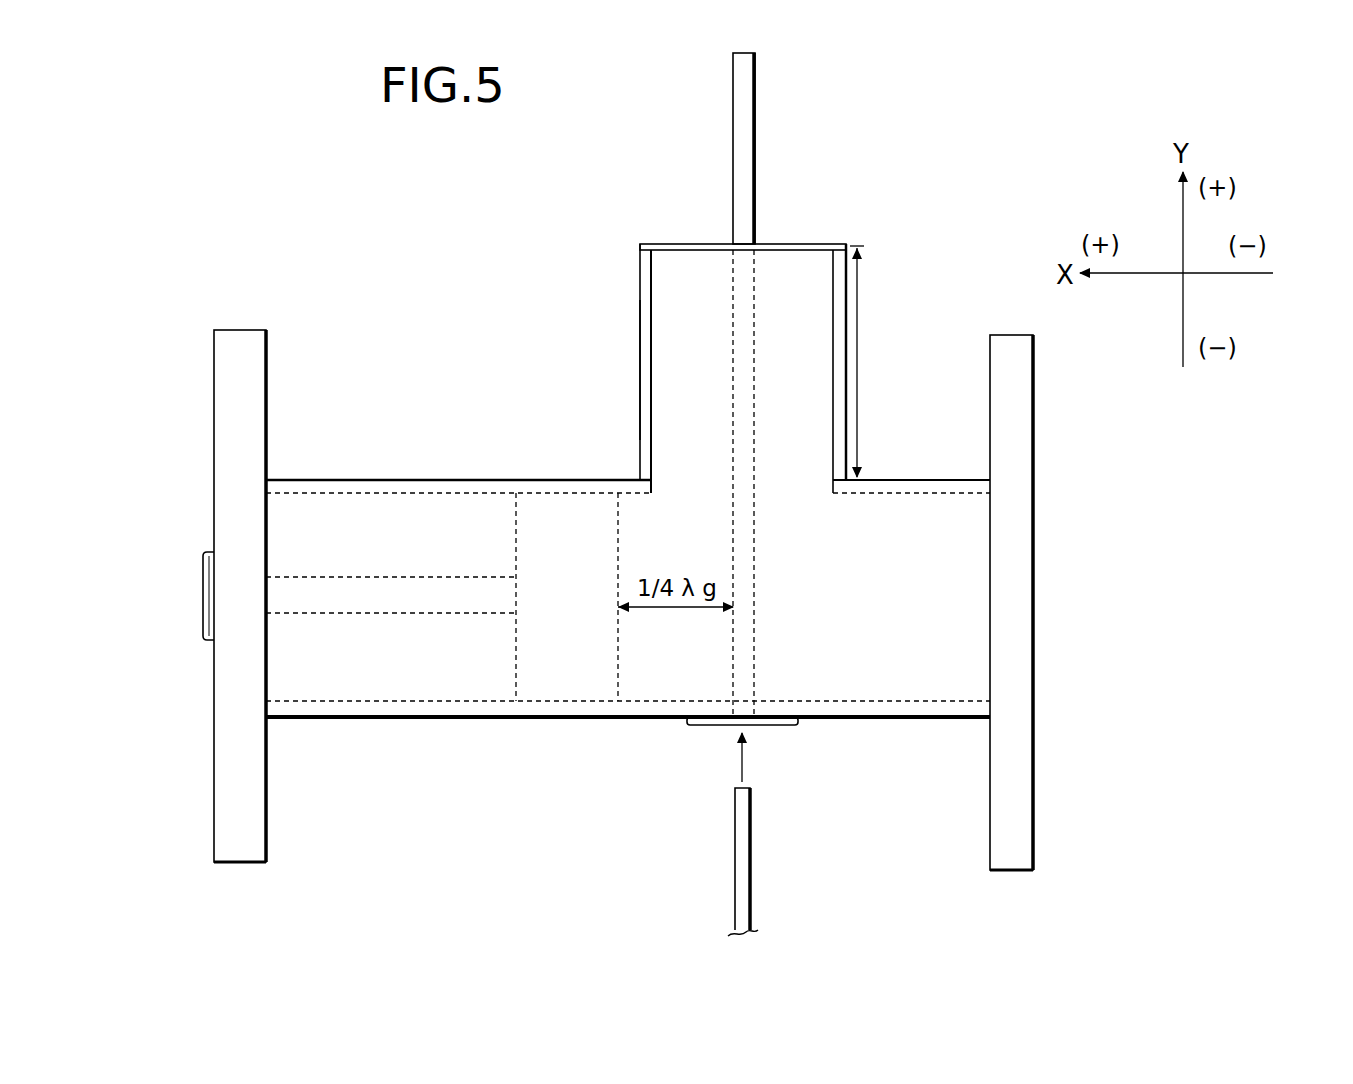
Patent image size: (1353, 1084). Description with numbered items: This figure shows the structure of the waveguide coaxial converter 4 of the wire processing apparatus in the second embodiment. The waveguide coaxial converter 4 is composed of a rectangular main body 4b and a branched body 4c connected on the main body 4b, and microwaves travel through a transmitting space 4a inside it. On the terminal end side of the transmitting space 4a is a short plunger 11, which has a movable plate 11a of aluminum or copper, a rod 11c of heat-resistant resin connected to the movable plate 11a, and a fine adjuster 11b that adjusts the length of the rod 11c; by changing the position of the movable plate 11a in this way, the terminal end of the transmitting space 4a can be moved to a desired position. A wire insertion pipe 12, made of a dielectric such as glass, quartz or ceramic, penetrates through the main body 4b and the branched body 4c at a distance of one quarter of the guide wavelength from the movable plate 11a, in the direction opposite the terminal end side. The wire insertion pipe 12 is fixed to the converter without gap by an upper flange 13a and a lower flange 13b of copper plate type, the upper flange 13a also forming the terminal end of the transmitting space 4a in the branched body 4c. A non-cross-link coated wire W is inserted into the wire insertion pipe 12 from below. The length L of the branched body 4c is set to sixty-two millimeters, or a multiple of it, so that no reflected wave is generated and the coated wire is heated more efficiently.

The waveguide coaxial converter 4 is at (903, 317).
The transmitting space 4a is at (790, 300).
The main body 4b is at (912, 480).
The branched body 4c is at (640, 355).
The short plunger 11 is at (305, 508).
The movable plate 11a is at (562, 685).
The fine adjuster 11b is at (200, 598).
The rod 11c is at (375, 577).
The wire insertion pipe 12 is at (752, 297).
The upper flange 13a is at (692, 243).
The lower flange 13b is at (783, 728).
The non-cross-link coated wire W is at (752, 848).
The length of the branched body L is at (863, 361).